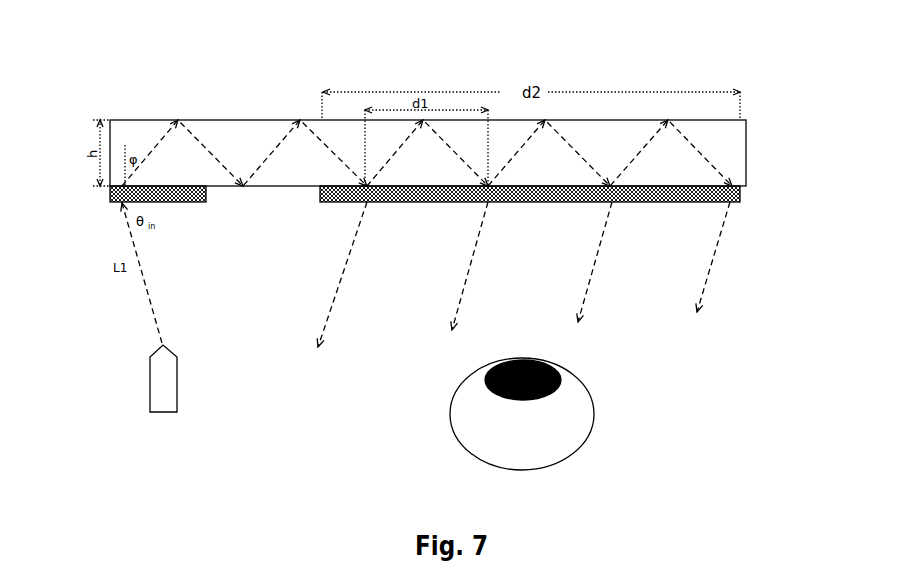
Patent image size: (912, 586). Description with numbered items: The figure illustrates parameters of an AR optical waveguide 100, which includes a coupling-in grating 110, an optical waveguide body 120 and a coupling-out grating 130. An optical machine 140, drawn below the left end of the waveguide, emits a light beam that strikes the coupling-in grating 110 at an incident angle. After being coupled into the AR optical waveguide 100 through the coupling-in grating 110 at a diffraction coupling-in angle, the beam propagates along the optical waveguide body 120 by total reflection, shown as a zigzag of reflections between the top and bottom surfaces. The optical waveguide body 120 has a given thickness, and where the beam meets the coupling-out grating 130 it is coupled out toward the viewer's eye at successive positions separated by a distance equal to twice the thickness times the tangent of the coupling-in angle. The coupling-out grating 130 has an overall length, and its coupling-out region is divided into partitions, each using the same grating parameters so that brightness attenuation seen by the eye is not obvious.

The AR optical waveguide 100 is at (590, 46).
The coupling-in grating 110 is at (110, 201).
The optical waveguide body 120 is at (746, 130).
The coupling-out grating 130 is at (741, 194).
The optical machine 140 is at (150, 400).